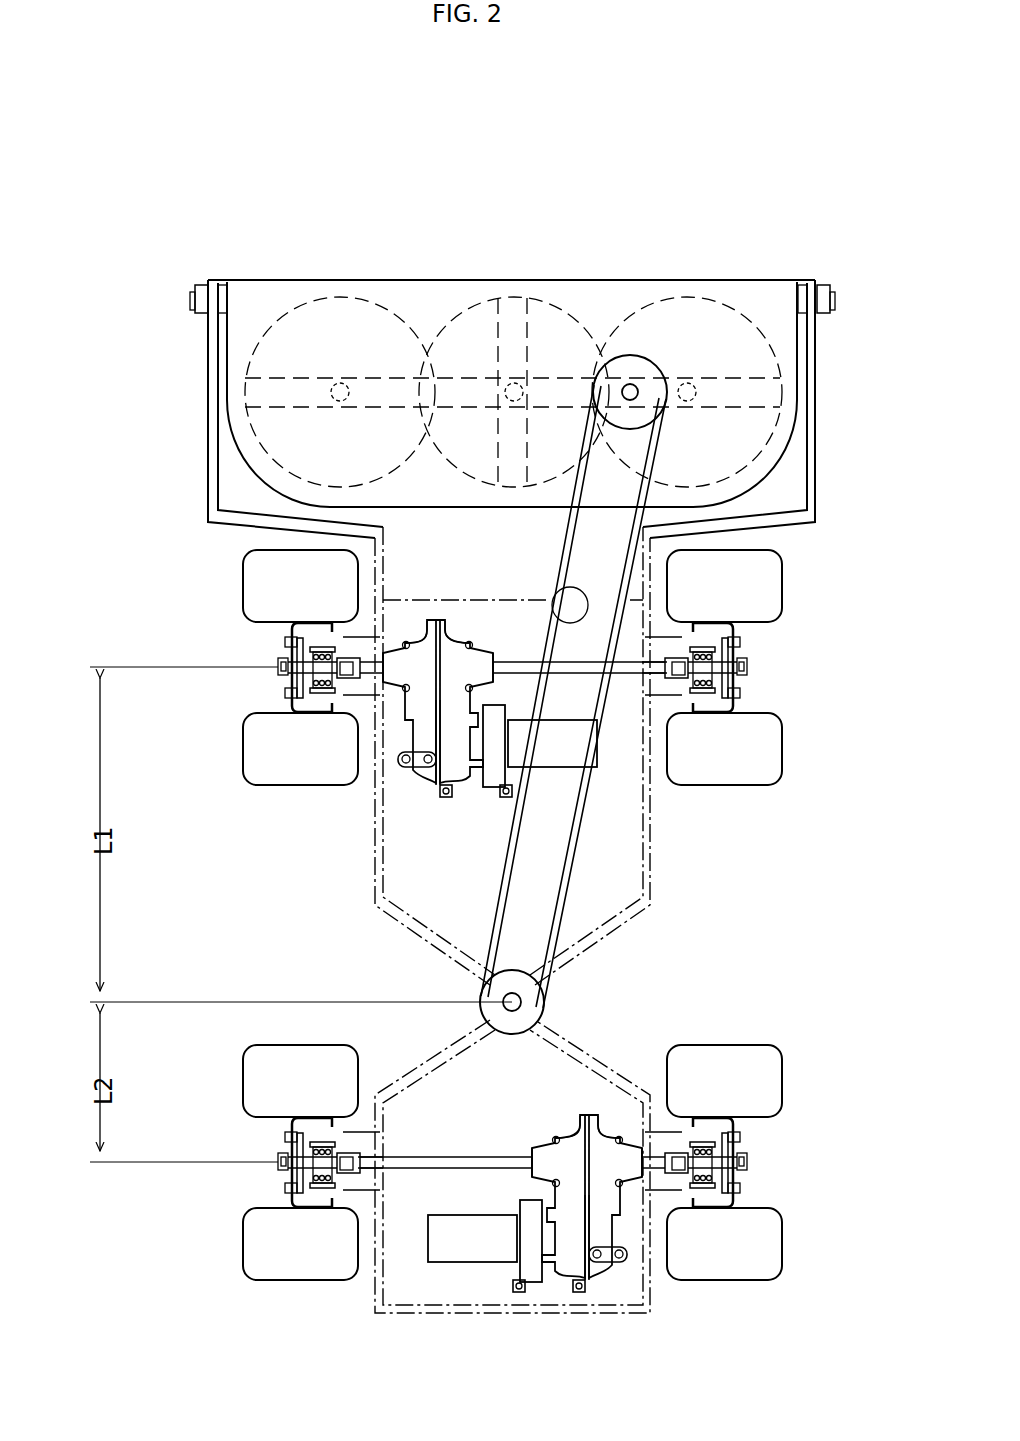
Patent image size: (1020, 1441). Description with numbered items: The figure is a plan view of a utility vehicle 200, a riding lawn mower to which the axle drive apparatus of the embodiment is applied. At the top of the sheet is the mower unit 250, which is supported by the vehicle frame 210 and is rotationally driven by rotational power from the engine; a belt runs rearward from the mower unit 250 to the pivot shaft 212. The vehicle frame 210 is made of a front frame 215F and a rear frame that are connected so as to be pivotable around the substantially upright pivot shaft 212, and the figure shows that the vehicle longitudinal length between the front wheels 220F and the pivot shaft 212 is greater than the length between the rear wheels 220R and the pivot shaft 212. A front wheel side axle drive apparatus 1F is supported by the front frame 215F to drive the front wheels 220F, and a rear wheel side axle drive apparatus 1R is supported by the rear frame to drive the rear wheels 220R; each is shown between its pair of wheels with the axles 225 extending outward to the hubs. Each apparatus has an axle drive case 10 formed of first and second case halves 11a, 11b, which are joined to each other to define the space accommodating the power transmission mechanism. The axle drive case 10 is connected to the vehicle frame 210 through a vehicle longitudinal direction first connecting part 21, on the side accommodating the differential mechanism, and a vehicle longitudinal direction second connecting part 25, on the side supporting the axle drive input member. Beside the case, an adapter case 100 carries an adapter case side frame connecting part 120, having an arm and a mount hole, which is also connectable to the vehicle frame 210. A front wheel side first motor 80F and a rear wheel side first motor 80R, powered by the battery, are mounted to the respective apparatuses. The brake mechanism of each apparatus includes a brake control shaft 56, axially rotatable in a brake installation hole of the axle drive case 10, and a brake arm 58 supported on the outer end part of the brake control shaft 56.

The utility vehicle 200 is at (232, 240).
The mower unit 250 is at (521, 247).
The vehicle frame 210 is at (660, 904).
The front frame 215F is at (660, 839).
The pivot shaft 212 is at (524, 1002).
The front wheels 220F is at (250, 598).
The rear wheels 220R is at (250, 1093).
The axle drive case 10 is at (438, 613).
The first case half 11a is at (455, 627).
The second case half 11b is at (422, 625).
The vehicle longitudinal direction first connecting part 21 is at (405, 640).
The axle shaft 225 is at (373, 540).
The electric motor bracket 100 is at (492, 792).
The front wheel side first motor 80F is at (533, 738).
The rear wheel side first motor 80R is at (456, 1248).
The brake control shaft 56 is at (437, 786).
The brake arm 58 is at (410, 768).
The vehicle longitudinal direction second connecting part 25 is at (446, 800).
The adapter case side frame connecting part 120 is at (507, 800).
The front wheel side axle drive apparatus 1F is at (385, 798).
The rear wheel side axle drive apparatus 1R is at (605, 1280).